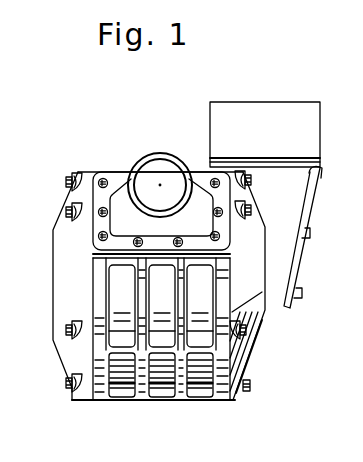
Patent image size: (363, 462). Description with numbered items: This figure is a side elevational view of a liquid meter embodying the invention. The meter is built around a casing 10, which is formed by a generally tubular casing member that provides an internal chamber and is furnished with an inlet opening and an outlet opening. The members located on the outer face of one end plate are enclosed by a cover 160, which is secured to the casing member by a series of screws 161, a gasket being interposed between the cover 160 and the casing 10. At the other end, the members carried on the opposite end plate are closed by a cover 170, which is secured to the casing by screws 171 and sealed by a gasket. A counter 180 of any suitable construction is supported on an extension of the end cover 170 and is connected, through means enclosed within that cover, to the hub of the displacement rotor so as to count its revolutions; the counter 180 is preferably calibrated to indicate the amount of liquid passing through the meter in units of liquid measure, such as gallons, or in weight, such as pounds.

The casing 10 is at (195, 400).
The cover 160 is at (60, 366).
The screws 161 is at (66, 180).
The cover 170 is at (262, 352).
The screws 171 is at (252, 388).
The counter 180 is at (301, 101).